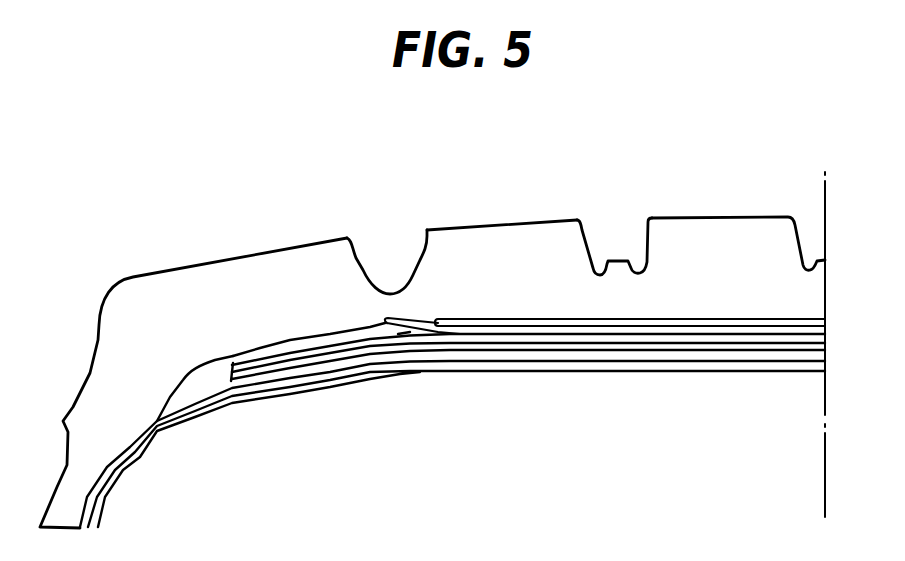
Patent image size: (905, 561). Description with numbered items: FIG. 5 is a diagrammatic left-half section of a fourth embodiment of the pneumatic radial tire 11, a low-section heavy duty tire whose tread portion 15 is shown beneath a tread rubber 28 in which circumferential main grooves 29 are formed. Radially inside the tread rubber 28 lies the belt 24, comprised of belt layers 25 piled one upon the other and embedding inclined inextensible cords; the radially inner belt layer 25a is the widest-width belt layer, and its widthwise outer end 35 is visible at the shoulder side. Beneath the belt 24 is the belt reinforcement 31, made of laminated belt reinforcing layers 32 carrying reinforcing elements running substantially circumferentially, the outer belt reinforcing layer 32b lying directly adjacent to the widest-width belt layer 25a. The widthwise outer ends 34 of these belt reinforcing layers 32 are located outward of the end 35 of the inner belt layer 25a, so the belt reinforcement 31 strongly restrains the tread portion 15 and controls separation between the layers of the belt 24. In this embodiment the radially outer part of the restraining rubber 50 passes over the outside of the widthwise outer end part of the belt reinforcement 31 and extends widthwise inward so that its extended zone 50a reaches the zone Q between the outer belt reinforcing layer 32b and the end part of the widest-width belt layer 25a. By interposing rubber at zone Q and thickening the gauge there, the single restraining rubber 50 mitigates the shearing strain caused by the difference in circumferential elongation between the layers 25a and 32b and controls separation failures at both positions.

The pneumatic radial tire 11 is at (270, 238).
The tread portion 15 is at (493, 222).
The belt 24 is at (683, 317).
The belt layer 25 is at (550, 333).
The inner belt layer 25a is at (487, 333).
The tread rubber 28 is at (559, 235).
The main groove 29 is at (421, 260).
The belt reinforcement 31 is at (573, 358).
The belt reinforcing layer 32 is at (668, 337).
The outer belt reinforcing layer 32b is at (458, 340).
The widthwise outer end of belt reinforcing layer 34 is at (247, 400).
The widthwise outer end of inner belt layer 35 is at (382, 320).
The restraining rubber 50 is at (192, 383).
The extended zone of restraining rubber 50a is at (278, 348).
The zone Q is at (403, 333).